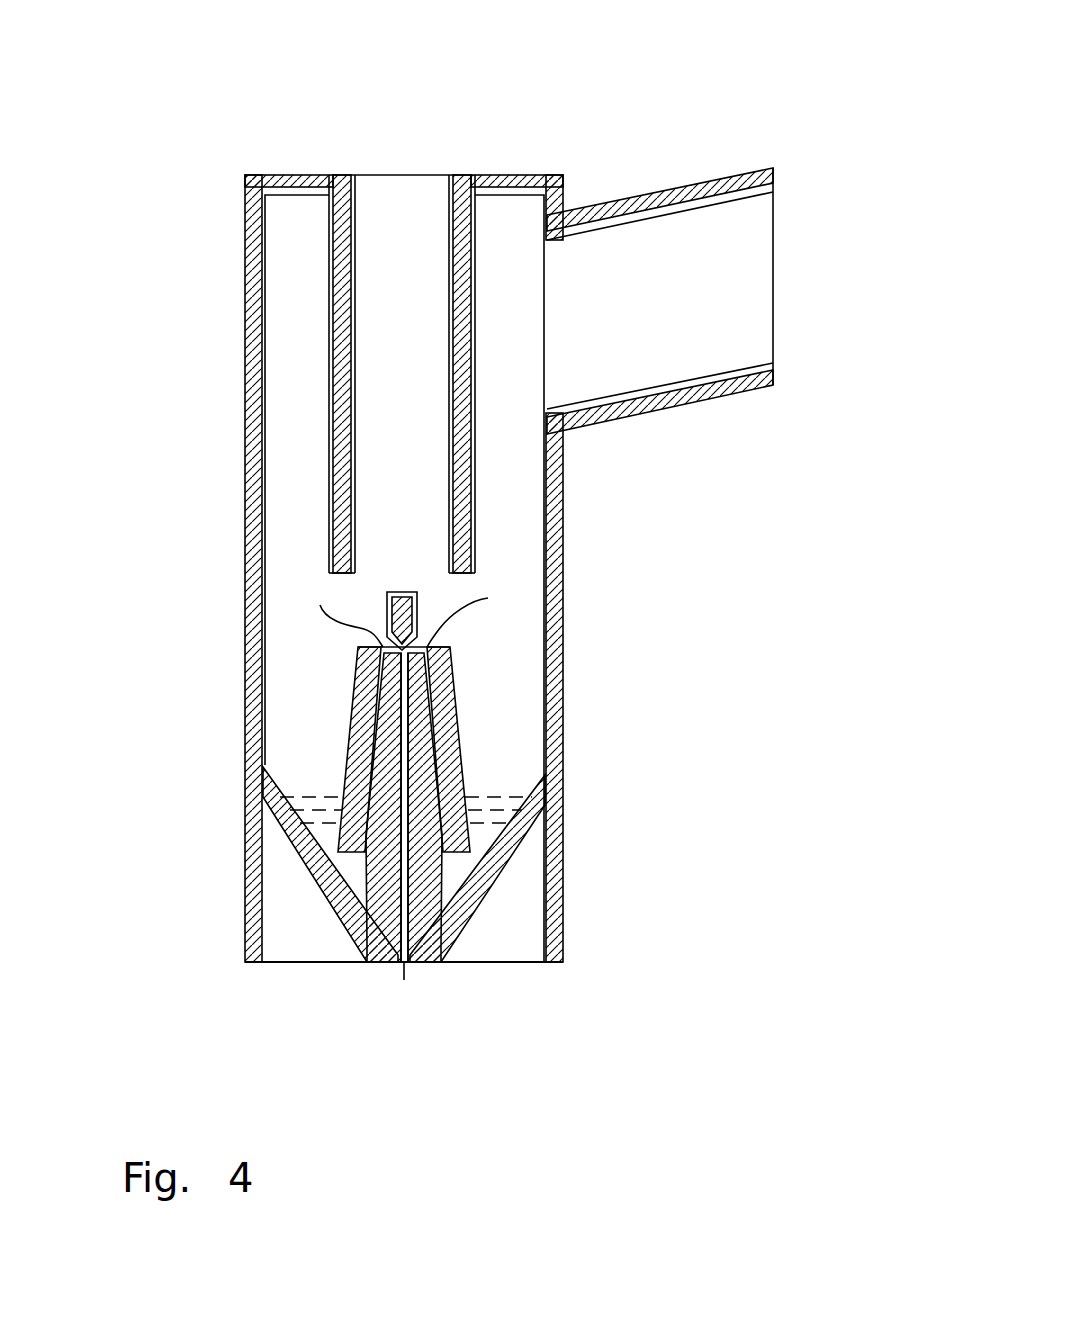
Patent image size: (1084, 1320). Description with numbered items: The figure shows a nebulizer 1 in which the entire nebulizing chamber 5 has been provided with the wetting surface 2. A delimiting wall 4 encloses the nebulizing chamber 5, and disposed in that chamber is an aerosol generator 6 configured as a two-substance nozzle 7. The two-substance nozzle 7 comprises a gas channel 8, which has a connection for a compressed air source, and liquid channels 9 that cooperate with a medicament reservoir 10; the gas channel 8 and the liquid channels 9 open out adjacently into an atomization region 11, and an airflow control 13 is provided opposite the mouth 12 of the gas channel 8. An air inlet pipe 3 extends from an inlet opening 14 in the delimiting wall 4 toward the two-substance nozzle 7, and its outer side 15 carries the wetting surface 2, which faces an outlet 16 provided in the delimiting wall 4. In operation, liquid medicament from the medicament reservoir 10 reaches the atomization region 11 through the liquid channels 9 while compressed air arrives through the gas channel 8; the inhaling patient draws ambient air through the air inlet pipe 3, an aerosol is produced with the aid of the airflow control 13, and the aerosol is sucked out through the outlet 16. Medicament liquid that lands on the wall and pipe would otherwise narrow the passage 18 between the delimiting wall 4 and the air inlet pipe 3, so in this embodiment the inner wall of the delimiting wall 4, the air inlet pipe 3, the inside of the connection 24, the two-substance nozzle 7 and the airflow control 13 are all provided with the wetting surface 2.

The nebulizer 1 is at (745, 640).
The wetting surface 2 is at (482, 473).
The air inlet pipe 3 is at (472, 318).
The delimiting wall 4 is at (252, 655).
The nebulizing chamber 5 is at (295, 398).
The aerosol generator 6 is at (503, 705).
The two-substance nozzle 7 is at (463, 655).
The gas channel 8 is at (406, 978).
The liquid channels 9 is at (402, 613).
The medicament reservoir 10 is at (320, 797).
The atomization region 11 is at (387, 640).
The mouth 12 is at (421, 645).
The airflow control 13 is at (418, 592).
The inlet opening 14 is at (437, 174).
The outer side 15 is at (470, 392).
The outlet 16 is at (556, 322).
The passage 18 is at (512, 505).
The connection 24 is at (718, 177).